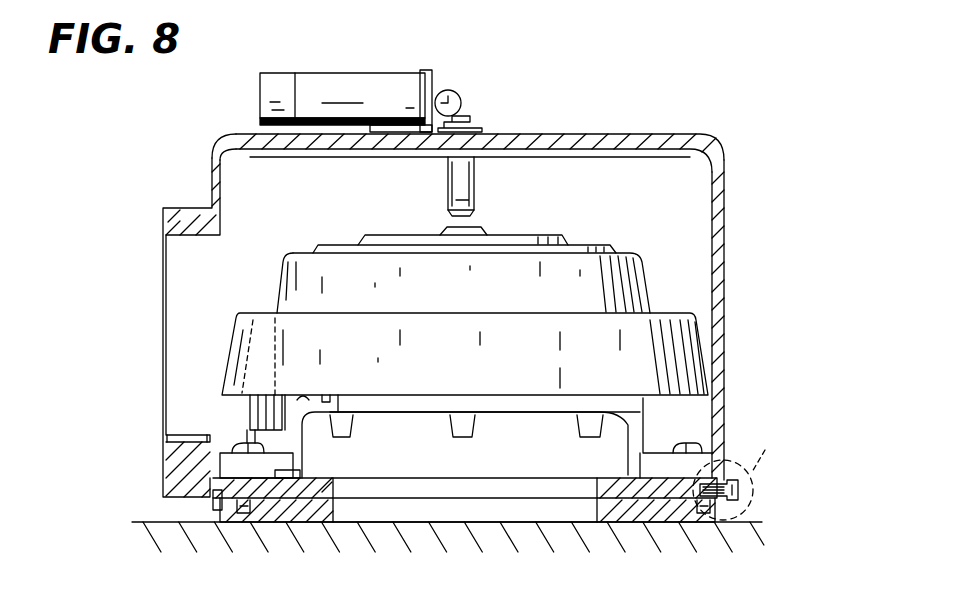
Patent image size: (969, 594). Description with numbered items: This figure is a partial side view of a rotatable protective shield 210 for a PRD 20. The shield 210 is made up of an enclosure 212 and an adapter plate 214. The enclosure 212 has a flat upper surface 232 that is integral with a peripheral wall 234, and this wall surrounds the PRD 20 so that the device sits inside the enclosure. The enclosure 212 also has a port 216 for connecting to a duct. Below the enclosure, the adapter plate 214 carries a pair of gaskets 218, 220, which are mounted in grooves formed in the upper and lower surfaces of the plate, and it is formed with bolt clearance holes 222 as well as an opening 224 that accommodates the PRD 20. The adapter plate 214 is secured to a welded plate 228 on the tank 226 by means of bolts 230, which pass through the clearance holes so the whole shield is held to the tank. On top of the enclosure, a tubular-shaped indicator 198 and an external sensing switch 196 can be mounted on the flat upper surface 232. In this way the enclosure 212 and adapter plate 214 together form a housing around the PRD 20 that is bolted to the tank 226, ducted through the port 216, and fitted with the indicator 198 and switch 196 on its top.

The PRD 20 is at (590, 216).
The external sensing switch 196 is at (371, 90).
The tubular-shaped indicator 198 is at (474, 196).
The protective shield 210 is at (576, 100).
The enclosure 212 is at (742, 233).
The adapter plate 214 is at (612, 478).
The port 216 is at (163, 313).
The gasket 218 is at (286, 478).
The gasket 220 is at (290, 510).
The bolt clearance holes 222 is at (216, 506).
The opening 224 is at (440, 480).
The tank 226 is at (176, 534).
The welded plate 228 is at (632, 522).
The bolts 230 is at (240, 440).
The flat upper surface 232 is at (660, 136).
The peripheral wall 234 is at (722, 312).